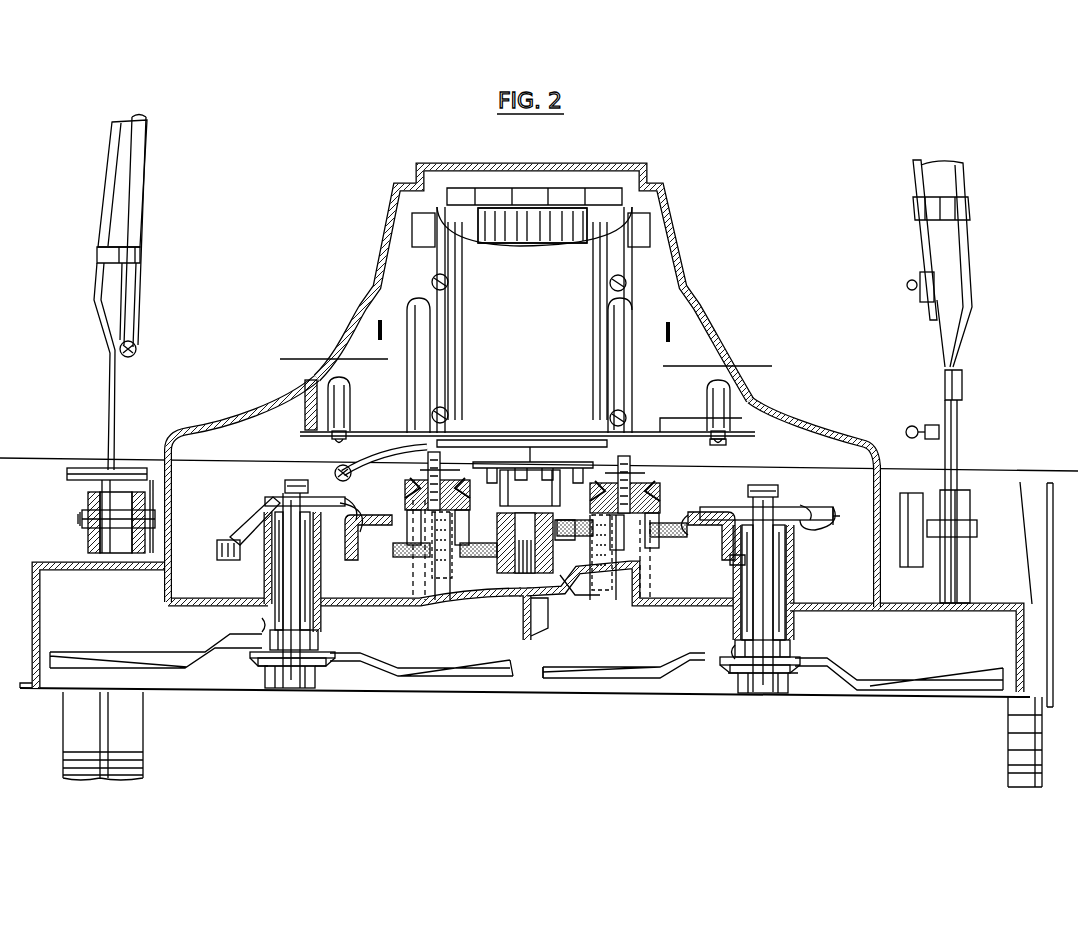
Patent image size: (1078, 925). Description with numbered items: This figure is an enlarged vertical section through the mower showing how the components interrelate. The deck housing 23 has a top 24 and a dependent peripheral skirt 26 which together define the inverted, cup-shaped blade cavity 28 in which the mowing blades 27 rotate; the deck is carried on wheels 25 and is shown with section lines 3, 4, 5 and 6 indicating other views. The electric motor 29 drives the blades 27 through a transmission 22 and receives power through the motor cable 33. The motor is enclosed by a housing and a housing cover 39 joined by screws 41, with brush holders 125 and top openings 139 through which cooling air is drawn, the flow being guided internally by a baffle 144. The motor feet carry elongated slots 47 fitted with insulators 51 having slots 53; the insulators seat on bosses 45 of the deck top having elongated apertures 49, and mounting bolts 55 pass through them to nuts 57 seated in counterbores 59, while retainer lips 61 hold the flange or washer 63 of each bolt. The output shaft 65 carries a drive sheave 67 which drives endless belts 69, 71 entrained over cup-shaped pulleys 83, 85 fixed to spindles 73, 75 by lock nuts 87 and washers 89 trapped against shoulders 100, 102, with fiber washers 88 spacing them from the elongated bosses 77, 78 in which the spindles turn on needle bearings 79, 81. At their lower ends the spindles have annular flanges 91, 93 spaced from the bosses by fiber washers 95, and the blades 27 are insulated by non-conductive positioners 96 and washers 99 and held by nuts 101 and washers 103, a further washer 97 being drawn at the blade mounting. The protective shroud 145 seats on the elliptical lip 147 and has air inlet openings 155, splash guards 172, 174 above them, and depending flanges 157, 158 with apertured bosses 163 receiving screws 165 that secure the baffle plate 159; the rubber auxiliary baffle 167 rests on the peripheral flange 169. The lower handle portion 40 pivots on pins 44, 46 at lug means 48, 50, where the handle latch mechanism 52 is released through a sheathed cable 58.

The section line 3- 3 is at (8, 455).
The section line 4- 4 is at (290, 355).
The section line 5- 5 is at (532, 178).
The section line 6- 6 is at (387, 294).
The transmission 22 is at (516, 582).
The deck housing 23 is at (667, 602).
The top 24 is at (382, 598).
The wheels 25 is at (132, 742).
The skirt 26 is at (1018, 652).
The mowing blades 27 is at (452, 676).
The blade cavity 28 is at (597, 678).
The electric motor 29 is at (636, 397).
The motor cable 33 is at (142, 170).
The housing cover 39 is at (513, 292).
The lower handle portion 40 is at (118, 197).
The screws 41 is at (448, 283).
The pin 44 is at (82, 512).
The bosses 45 is at (478, 560).
The pin 46 is at (976, 522).
The elongated slot 47 is at (405, 500).
The lug means 48 is at (78, 492).
The elongated apertures 49 is at (519, 561).
The lug means 50 is at (988, 492).
The insulator 51 is at (408, 518).
The handle latch mechanism 52 is at (934, 412).
The elongated slot 53 is at (458, 516).
The mounting bolts 55 is at (440, 470).
The nuts 57 is at (442, 603).
The sheathed cable 58 is at (912, 184).
The counterbores 59 is at (418, 606).
The retainer lips 61 is at (425, 478).
The flange or washer 63 is at (435, 470).
The output shaft 65 is at (506, 566).
The drive sheave 67 is at (562, 598).
The endless belt 69 is at (366, 562).
The endless belt 71 is at (697, 515).
The spindle 73 is at (285, 525).
The spindle 75 is at (770, 575).
The elongated boss 77 is at (264, 572).
The elongated boss 78 is at (797, 585).
The needle bearings 79 is at (228, 548).
The needle bearings 81 is at (322, 612).
The cup shaped pulley 83 is at (240, 525).
The cup shaped pulley 85 is at (837, 512).
The lock nuts 87 is at (288, 497).
The fiber washers 88 is at (280, 500).
The washer 89 is at (343, 512).
The annular flange 91 is at (268, 638).
The annular flange 93 is at (793, 650).
The fiber washers 95 is at (260, 627).
The non-conductive blade positioners 96 is at (266, 676).
The washer 97 is at (330, 658).
The non-conductive washers 99 is at (260, 664).
The shoulder 100 is at (309, 488).
The nuts 101 is at (285, 690).
The shoulder 102 is at (753, 500).
The washers 103 is at (322, 672).
The brush holders 125 is at (418, 230).
The openings 139 is at (572, 218).
The baffle 144 is at (536, 488).
The protective shroud 145 is at (241, 418).
The elliptical lip 147 is at (882, 585).
The air inlet openings 155 is at (364, 326).
The depending flange 157 is at (311, 386).
The depending flange 158 is at (755, 413).
The baffle plate 159 is at (684, 428).
The apertured bosses 163 is at (342, 397).
The screws 165 is at (334, 438).
The auxiliary baffle 167 is at (720, 446).
The peripheral flange 169 is at (556, 441).
The splash guard 172 is at (334, 339).
The splash guard 174 is at (717, 344).